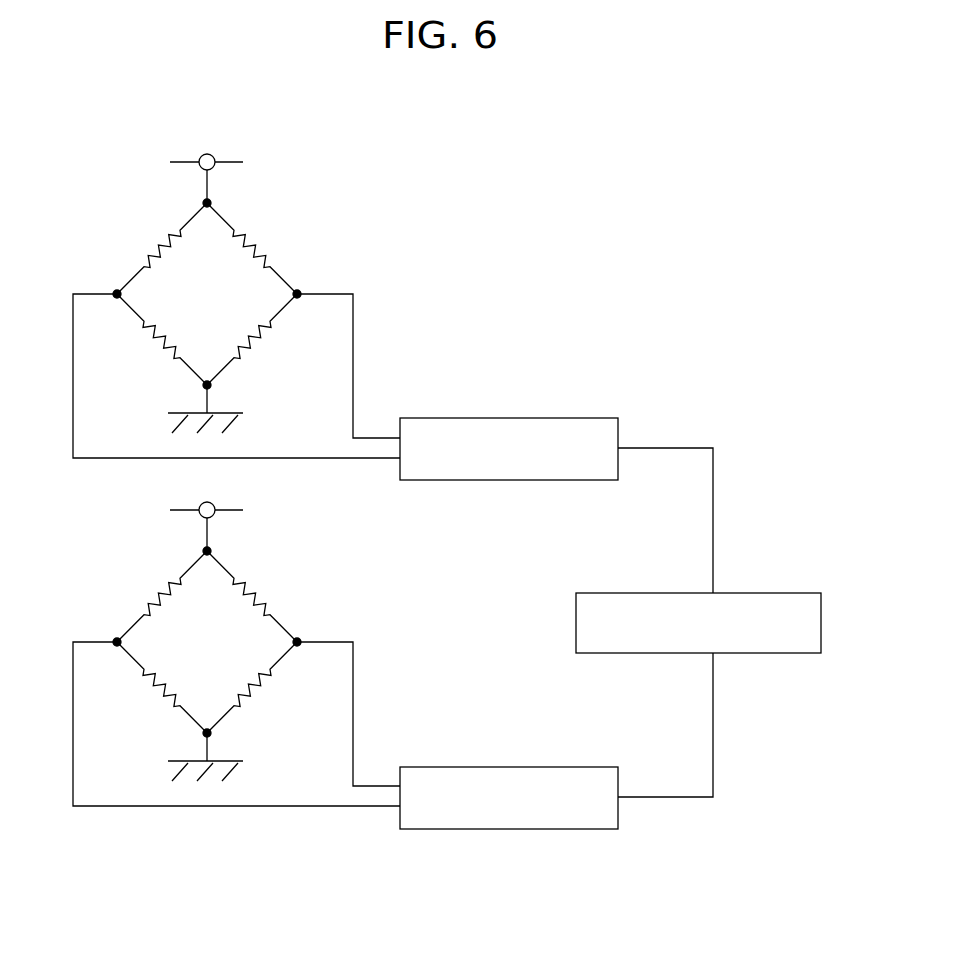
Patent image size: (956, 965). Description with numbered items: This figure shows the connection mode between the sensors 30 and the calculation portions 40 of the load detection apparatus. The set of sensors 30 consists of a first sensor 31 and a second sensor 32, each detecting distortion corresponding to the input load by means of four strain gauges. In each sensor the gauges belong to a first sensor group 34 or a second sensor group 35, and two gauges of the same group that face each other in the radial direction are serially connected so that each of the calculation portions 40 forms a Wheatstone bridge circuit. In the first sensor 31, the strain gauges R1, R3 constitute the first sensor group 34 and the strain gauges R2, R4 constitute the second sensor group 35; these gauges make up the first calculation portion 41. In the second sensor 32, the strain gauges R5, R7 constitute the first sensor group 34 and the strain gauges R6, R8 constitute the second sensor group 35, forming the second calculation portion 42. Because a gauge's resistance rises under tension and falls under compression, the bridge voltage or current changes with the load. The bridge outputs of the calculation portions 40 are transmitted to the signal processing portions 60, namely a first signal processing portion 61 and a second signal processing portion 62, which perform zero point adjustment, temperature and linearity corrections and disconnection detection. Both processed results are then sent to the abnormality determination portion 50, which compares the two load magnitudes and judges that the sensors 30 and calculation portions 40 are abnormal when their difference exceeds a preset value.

The sensors 30 is at (179, 463).
The sensor 31 is at (152, 200).
The sensor 32 is at (179, 637).
The first sensor group 34 is at (201, 471).
The second sensor group 35 is at (208, 470).
The strain gauge R1 is at (252, 343).
The strain gauge R2 is at (254, 248).
The strain gauge R3 is at (156, 248).
The strain gauge R4 is at (161, 341).
The strain gauge R5 is at (252, 691).
The strain gauge R6 is at (254, 596).
The strain gauge R7 is at (156, 596).
The strain gauge R8 is at (161, 689).
The calculation portions 40 is at (273, 508).
The calculation portion 41 is at (330, 240).
The calculation portion 42 is at (273, 682).
The abnormality determination portion 50 is at (755, 592).
The signal processing portions 60 is at (509, 605).
The signal processing portion 61 is at (525, 418).
The signal processing portion 62 is at (509, 779).